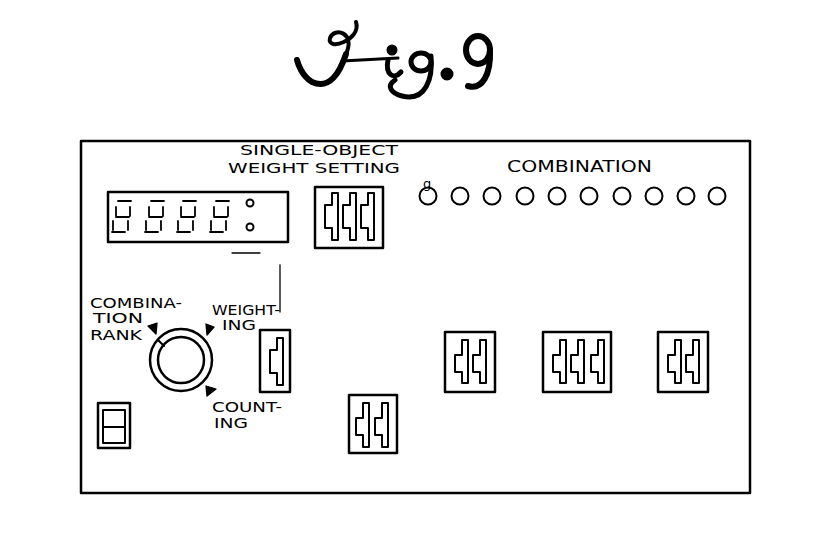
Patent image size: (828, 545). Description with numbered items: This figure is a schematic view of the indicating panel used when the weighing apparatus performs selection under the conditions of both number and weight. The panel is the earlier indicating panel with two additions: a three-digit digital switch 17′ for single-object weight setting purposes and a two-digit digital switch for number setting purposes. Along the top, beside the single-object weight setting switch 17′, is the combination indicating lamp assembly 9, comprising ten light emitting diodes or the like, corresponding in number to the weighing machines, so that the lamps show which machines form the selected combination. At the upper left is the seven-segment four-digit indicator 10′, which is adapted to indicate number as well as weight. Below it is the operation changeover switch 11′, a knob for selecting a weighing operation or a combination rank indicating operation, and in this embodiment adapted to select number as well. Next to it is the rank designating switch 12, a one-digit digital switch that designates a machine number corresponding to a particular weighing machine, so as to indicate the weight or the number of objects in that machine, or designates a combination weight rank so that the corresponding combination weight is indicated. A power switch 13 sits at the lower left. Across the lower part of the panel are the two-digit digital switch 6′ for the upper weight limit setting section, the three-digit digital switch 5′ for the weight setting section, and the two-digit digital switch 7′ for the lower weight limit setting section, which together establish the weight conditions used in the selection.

The combination indicating lamp assembly 9 is at (700, 180).
The 7-segment 4-digit indicator 10′ is at (140, 192).
The operation changeover switch 11′ is at (163, 393).
The rank designating switch 12 is at (291, 340).
The power switch 13 is at (130, 432).
The 3-digit digital switch 17′ is at (354, 250).
The 2-digit digital switch 6′ is at (470, 395).
The 3-digit digital switch 5′ is at (572, 395).
The 2-digit digital switch 7′ is at (690, 395).